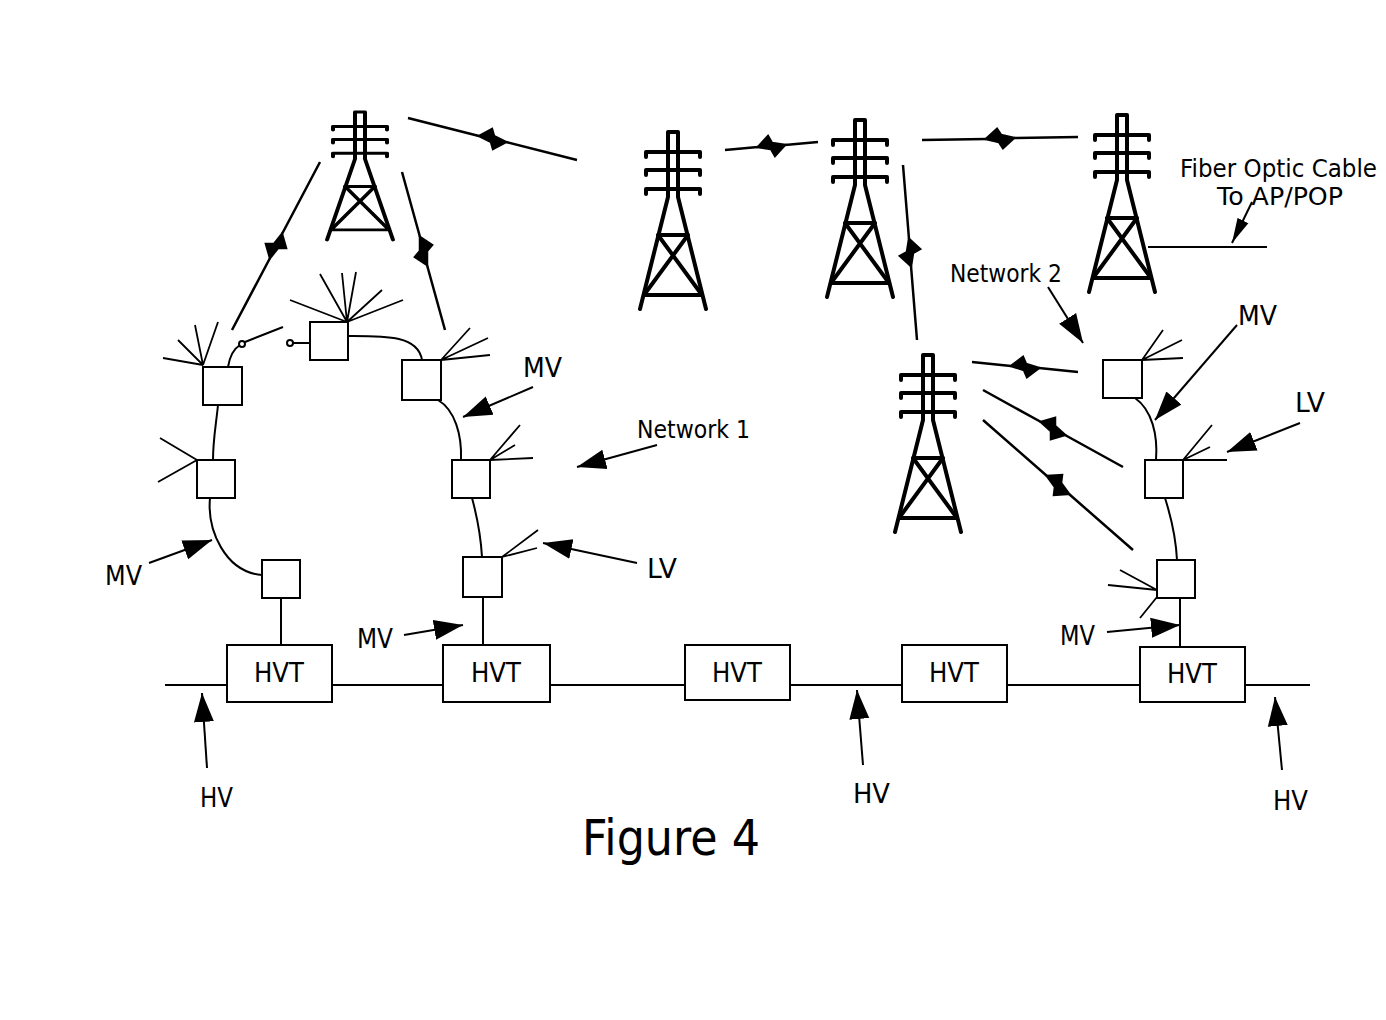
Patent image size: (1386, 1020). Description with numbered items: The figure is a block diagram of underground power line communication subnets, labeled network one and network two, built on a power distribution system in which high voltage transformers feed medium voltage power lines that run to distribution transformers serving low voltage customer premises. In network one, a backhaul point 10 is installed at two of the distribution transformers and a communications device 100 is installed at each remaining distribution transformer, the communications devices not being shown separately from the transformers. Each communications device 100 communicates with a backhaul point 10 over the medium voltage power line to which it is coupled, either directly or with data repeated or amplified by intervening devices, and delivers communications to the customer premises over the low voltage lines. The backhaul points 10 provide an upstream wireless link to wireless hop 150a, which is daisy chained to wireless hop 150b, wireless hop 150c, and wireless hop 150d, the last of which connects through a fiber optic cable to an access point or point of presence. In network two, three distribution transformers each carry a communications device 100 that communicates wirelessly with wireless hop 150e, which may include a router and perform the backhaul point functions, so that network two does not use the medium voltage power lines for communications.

The backhaul point 10 is at (197, 390).
The communications device 100 is at (453, 558).
The wireless hop 150a is at (329, 176).
The wireless hop 150b is at (673, 239).
The wireless hop 150c is at (860, 224).
The wireless hop 150d is at (1101, 187).
The wireless hop 150e is at (928, 460).